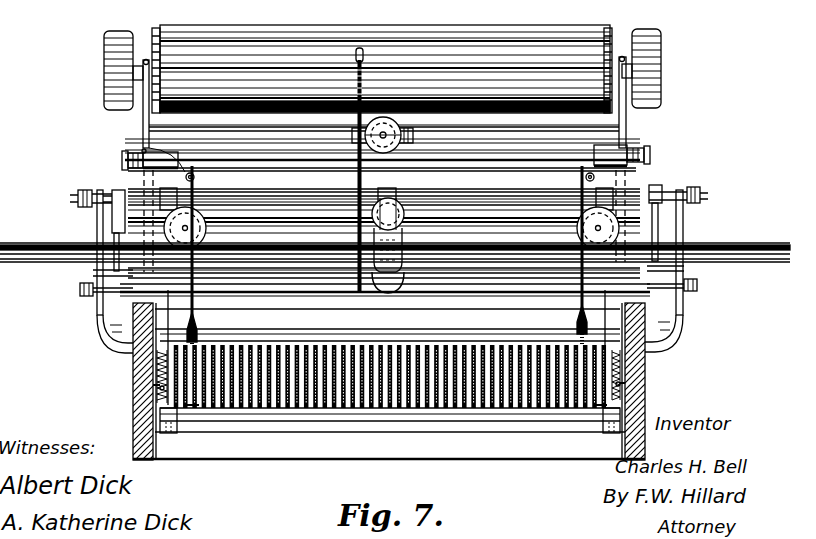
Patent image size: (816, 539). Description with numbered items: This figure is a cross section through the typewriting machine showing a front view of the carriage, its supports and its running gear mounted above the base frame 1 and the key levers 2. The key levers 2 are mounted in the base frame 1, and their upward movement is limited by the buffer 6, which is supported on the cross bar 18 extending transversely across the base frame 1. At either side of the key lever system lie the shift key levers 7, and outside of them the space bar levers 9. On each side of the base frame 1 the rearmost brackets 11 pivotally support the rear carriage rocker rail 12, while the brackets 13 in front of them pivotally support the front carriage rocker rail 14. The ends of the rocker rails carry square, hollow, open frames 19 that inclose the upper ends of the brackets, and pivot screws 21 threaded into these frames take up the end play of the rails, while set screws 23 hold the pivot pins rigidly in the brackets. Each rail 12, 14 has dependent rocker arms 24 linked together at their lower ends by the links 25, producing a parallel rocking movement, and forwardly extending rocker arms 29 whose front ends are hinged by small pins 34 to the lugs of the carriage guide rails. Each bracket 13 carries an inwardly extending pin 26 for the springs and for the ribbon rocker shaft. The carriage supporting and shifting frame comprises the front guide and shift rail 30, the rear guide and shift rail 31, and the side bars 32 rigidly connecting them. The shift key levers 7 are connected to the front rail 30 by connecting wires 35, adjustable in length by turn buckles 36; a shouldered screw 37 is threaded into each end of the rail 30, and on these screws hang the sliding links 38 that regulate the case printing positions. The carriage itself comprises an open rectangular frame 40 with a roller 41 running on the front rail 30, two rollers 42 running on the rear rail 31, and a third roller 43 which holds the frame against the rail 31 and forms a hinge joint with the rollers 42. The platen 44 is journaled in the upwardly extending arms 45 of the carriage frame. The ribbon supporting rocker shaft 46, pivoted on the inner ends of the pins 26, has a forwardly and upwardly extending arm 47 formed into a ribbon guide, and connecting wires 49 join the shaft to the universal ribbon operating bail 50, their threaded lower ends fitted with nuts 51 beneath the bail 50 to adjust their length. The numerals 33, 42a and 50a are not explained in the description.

The base frame 1 is at (150, 383).
The key levers 2 is at (325, 409).
The key lever buffer 6 is at (437, 333).
The shift key levers 7 is at (194, 408).
The space bar levers 9 is at (187, 410).
The rearmost brackets 11 is at (100, 337).
The rear carriage rocker rail 12 is at (313, 292).
The brackets 13 is at (97, 226).
The front carriage rocker rail 14 is at (466, 194).
The cross bar 18 is at (390, 326).
The square hollow open frames 19 is at (92, 195).
The pivot screws 21 is at (72, 198).
The set screws 23 is at (80, 190).
The dependent rocker arms 24 is at (78, 205).
The links 25 is at (105, 308).
The inwardly extending pin 26 is at (95, 272).
The forwardly extending rocker arm 29 is at (195, 178).
The front guide and shift rail 30 is at (292, 195).
The rear guide and shift rail 31 is at (22, 263).
The side bars 32 is at (199, 209).
The block 33 is at (160, 158).
The small pins 34 is at (185, 170).
The connecting wires 35 is at (195, 306).
The turn buckles 36 is at (197, 326).
The shouldered screw 37 is at (125, 157).
The sliding links 38 is at (122, 161).
The carriage frame 40 is at (384, 125).
The roller 41 is at (401, 128).
The rollers 42 is at (500, 221).
The disc 42a is at (405, 215).
The third roller 43 is at (388, 291).
The platen 44 is at (382, 69).
The upwardly extending arms 45 is at (143, 118).
The ribbon supporting rocker shaft 46 is at (297, 270).
The arm 47 is at (364, 70).
The connecting wires 49 is at (160, 402).
The universal ribbon operating bail 50 is at (482, 410).
The stop 50a is at (160, 388).
The nuts 51 is at (390, 432).